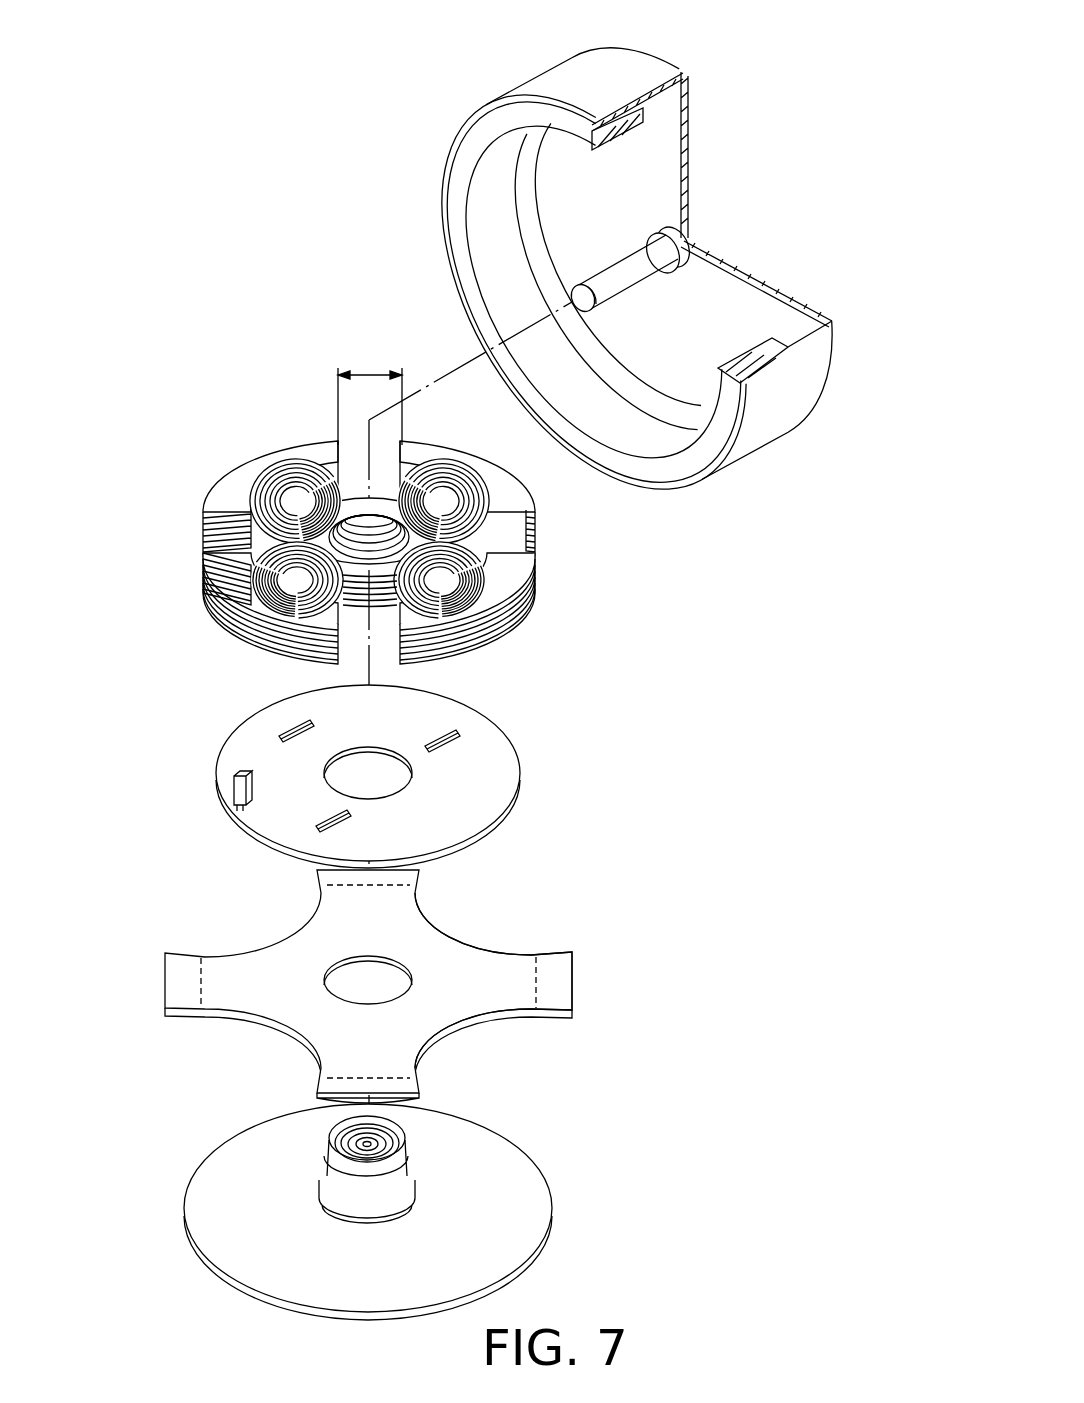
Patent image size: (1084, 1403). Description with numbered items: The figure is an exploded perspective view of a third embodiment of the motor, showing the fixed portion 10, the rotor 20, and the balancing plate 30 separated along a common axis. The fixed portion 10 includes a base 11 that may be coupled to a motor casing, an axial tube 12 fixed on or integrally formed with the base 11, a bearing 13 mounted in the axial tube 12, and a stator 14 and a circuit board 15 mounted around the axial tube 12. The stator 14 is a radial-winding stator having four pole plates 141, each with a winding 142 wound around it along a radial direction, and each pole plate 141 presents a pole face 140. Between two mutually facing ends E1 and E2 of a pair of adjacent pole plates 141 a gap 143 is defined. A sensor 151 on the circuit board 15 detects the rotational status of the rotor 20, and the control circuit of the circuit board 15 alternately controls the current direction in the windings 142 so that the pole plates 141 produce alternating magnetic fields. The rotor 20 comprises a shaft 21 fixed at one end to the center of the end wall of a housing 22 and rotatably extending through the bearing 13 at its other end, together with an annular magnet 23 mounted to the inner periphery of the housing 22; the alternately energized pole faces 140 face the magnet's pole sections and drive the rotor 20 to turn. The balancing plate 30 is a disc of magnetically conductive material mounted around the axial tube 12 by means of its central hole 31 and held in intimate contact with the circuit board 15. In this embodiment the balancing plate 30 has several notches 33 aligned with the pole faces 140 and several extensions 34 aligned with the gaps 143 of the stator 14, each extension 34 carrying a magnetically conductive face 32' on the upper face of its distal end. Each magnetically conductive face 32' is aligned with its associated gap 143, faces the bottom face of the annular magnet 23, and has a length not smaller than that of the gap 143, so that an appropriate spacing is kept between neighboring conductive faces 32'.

The fixed portion 10 is at (746, 562).
The base 11 is at (449, 1171).
The axial tube 12 is at (516, 1122).
The bearing 13 is at (407, 1138).
The stator 14 is at (426, 469).
The pole face 140 is at (208, 608).
The pole plate 141 is at (510, 585).
The winding 142 is at (470, 548).
The gap 143 is at (361, 352).
The circuit board 15 is at (422, 776).
The sensor 151 is at (235, 783).
The rotor 20 is at (573, 247).
The shaft 21 is at (637, 281).
The housing 22 is at (640, 100).
The annular magnet 23 is at (643, 122).
The balancing plate 30 is at (397, 978).
The central hole 31 is at (395, 962).
The magnetically conductive face 32' is at (590, 979).
The notch 33 is at (452, 940).
The extension 34 is at (473, 997).
The end E1 is at (401, 440).
The end E2 is at (337, 440).